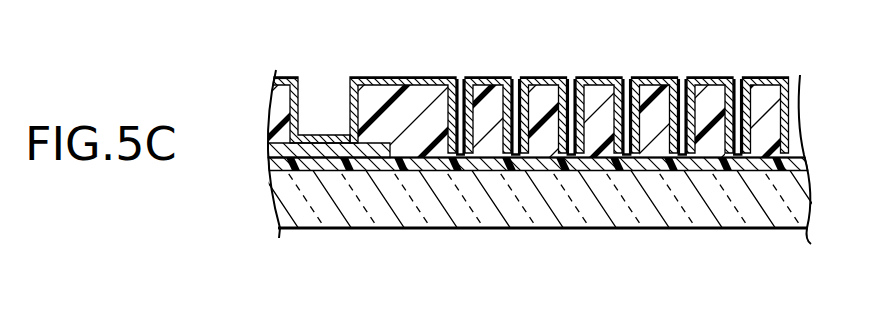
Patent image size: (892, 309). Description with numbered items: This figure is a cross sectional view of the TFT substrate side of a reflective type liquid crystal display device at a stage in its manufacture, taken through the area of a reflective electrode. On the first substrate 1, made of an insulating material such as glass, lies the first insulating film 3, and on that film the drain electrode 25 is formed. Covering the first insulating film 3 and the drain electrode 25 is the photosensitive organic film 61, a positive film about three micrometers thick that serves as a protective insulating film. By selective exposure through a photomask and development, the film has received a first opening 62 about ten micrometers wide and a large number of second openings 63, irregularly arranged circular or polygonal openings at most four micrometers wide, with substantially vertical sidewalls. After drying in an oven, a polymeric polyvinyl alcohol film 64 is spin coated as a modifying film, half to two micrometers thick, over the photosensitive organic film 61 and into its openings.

The first substrate 1 is at (727, 207).
The first insulating film 3 is at (597, 166).
The drain electrode 25 is at (319, 150).
The photosensitive organic film 61 is at (482, 149).
The first opening 62 is at (325, 118).
The second openings 63 is at (571, 88).
The PVA film 64 is at (420, 80).